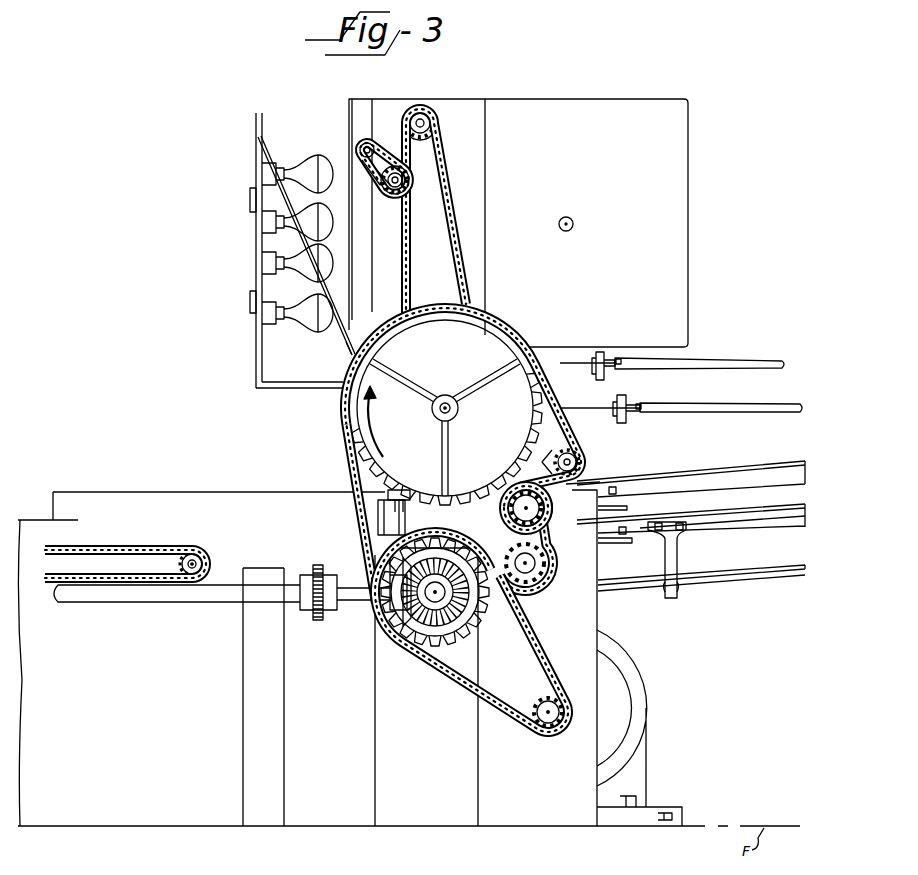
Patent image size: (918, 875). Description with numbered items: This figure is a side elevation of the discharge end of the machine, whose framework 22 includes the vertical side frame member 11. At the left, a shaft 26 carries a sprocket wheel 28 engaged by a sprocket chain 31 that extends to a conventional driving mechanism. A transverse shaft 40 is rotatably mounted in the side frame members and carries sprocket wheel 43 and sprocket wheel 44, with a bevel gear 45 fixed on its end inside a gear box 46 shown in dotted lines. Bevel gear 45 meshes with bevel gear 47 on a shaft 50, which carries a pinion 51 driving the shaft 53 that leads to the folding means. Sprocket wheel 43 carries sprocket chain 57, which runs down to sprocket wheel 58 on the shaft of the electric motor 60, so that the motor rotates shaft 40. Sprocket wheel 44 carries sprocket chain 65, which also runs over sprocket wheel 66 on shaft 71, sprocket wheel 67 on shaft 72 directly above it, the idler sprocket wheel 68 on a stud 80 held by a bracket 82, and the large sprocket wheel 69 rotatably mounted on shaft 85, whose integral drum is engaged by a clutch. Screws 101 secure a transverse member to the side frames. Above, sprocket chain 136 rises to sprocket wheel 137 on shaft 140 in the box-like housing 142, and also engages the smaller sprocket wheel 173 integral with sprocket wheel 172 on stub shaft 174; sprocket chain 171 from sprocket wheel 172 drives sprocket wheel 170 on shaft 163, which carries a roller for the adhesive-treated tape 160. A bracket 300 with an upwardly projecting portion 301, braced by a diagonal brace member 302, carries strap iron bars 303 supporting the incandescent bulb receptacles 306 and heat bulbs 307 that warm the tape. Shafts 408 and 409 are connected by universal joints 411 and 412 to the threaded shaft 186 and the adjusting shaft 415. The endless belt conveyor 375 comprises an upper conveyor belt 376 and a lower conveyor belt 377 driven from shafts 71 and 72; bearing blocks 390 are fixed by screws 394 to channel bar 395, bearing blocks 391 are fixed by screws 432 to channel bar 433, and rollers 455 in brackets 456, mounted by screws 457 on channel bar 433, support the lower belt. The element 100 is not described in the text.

The side frame member 11 is at (274, 490).
The framework 22 is at (167, 490).
The shaft 26 is at (204, 554).
The sprocket wheel 28 is at (206, 566).
The sprocket chain 31 is at (152, 548).
The shaft 40 is at (452, 612).
The sprocket wheel 43 is at (490, 645).
The sprocket wheel 44 is at (389, 517).
The bevel gear 45 is at (438, 578).
The gear box 46 is at (375, 696).
The bevel gear 47 is at (424, 620).
The shaft 50 is at (348, 588).
The pinion 51 is at (318, 620).
The shaft 53 is at (194, 602).
The sprocket chain 57 is at (460, 692).
The sprocket wheel 58 is at (538, 700).
The electric motor 60 is at (644, 710).
The sprocket chain 65 is at (366, 524).
The sprocket wheel 66 is at (504, 540).
The sprocket wheel 67 is at (548, 504).
The sprocket wheel 68 is at (576, 452).
The sprocket wheel 69 is at (447, 446).
The shaft 71 is at (528, 566).
The shaft 72 is at (540, 514).
The stud 80 is at (582, 462).
The bracket 82 is at (578, 476).
The shaft 85 is at (455, 414).
The bracket 100 is at (394, 490).
The screws 101 is at (404, 492).
The sprocket chain 136 is at (451, 200).
The sprocket wheel 137 is at (425, 138).
The shaft 140 is at (428, 124).
The box-like housing 142 is at (455, 100).
The tape 160 is at (350, 350).
The shaft 163 is at (378, 142).
The sprocket wheel 170 is at (390, 156).
The sprocket chain 171 is at (364, 142).
The sprocket wheel 172 is at (374, 170).
The sprocket wheel 173 is at (380, 192).
The stub shaft 174 is at (392, 196).
The threaded shaft 186 is at (590, 410).
The bracket 300 is at (296, 389).
The upwardly projecting portion 301 is at (256, 368).
The brace member 302 is at (272, 146).
The strap iron bars 303 is at (256, 196).
The incandescent bulb receptacles 306 is at (262, 168).
The incandescent bulbs 307 is at (318, 160).
The endless belt conveyor 375 is at (778, 574).
The conveyor belt 376 is at (756, 462).
The conveyor belt 377 is at (758, 514).
The bearing blocks 390 is at (620, 498).
The bearing blocks 391 is at (604, 548).
The screws 394 is at (616, 490).
The channel bar 395 is at (786, 484).
The shaft 408 is at (708, 410).
The shaft 409 is at (695, 364).
The universal joint 411 is at (632, 414).
The universal joint 412 is at (608, 372).
The shaft 415 is at (580, 370).
The screws 432 is at (626, 540).
The channel bar 433 is at (730, 530).
The rollers 455 is at (664, 590).
The brackets 456 is at (678, 566).
The screws 457 is at (682, 540).